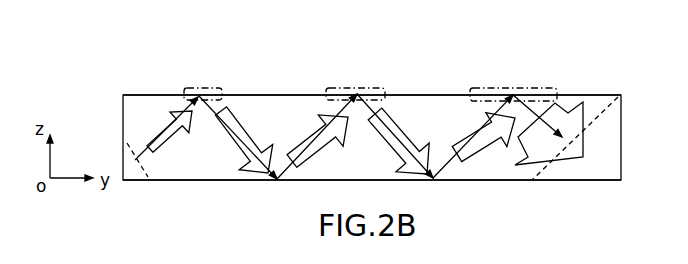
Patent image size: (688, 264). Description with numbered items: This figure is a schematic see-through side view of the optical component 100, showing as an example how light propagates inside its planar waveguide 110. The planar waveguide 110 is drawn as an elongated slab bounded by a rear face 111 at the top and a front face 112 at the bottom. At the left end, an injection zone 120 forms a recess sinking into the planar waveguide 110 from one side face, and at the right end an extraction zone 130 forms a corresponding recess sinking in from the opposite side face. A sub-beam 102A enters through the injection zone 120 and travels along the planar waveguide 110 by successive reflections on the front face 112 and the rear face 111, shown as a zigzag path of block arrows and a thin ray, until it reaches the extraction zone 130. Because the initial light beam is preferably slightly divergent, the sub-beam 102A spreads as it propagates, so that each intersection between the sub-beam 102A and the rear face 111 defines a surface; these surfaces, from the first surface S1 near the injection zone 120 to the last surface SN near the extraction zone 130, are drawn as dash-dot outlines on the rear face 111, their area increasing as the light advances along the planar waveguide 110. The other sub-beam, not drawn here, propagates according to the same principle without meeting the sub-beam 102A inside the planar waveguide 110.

The optical component 100 is at (91, 63).
The sub-beam 102A is at (167, 120).
The planar waveguide 110 is at (125, 122).
The rear face 111 is at (277, 94).
The front face 112 is at (212, 181).
The injection zone 120 is at (140, 190).
The extraction zone 130 is at (625, 191).
The intersection surface S1 is at (203, 88).
The intersection surface SN is at (537, 88).